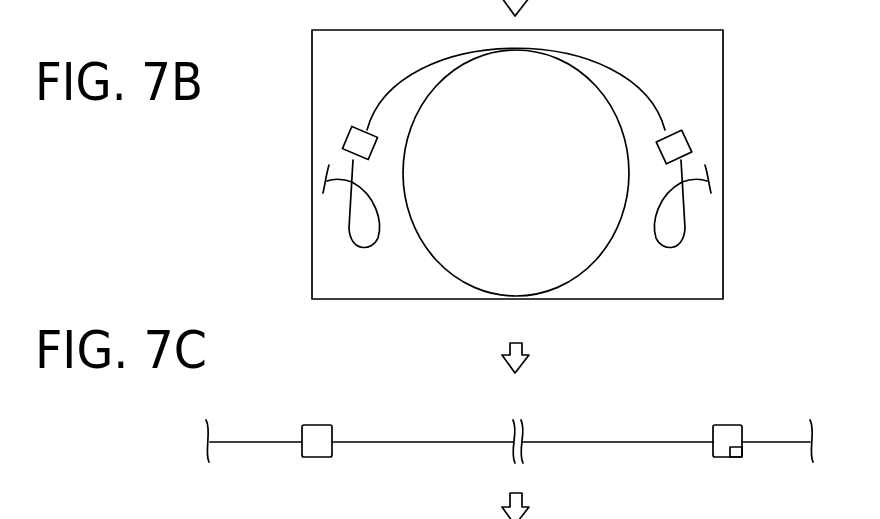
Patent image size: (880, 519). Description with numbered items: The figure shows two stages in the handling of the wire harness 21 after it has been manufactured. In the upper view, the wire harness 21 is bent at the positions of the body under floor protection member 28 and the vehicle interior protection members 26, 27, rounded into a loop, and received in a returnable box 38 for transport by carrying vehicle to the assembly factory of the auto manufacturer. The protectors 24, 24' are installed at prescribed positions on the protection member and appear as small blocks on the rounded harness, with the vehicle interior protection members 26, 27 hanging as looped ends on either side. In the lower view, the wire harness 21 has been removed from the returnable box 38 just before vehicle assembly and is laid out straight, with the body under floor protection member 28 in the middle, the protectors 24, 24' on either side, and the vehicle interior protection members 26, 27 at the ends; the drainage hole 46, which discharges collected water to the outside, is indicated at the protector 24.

In FIG. 7B, the wire harness 21 is at (407, 71).
In FIG. 7C, the wire harness 21 is at (438, 435).
In FIG. 7B, the protector 24 is at (725, 154).
In FIG. 7C, the protector 24 is at (728, 412).
In FIG. 7B, the protector 24' is at (305, 135).
In FIG. 7C, the protector 24' is at (319, 413).
In FIG. 7B, the vehicle interior protection member 26 is at (348, 212).
In FIG. 7C, the vehicle interior protection member 26 is at (233, 445).
In FIG. 7B, the vehicle interior protection member 27 is at (700, 214).
In FIG. 7C, the vehicle interior protection member 27 is at (768, 445).
In FIG. 7B, the body under floor protection member 28 is at (592, 268).
In FIG. 7C, the body under floor protection member 28 is at (623, 440).
In FIG. 7B, the returnable box 38 is at (723, 116).
In FIG. 7B, the drainage hole 46 is at (723, 8).
In FIG. 7C, the drainage hole 46 is at (735, 460).